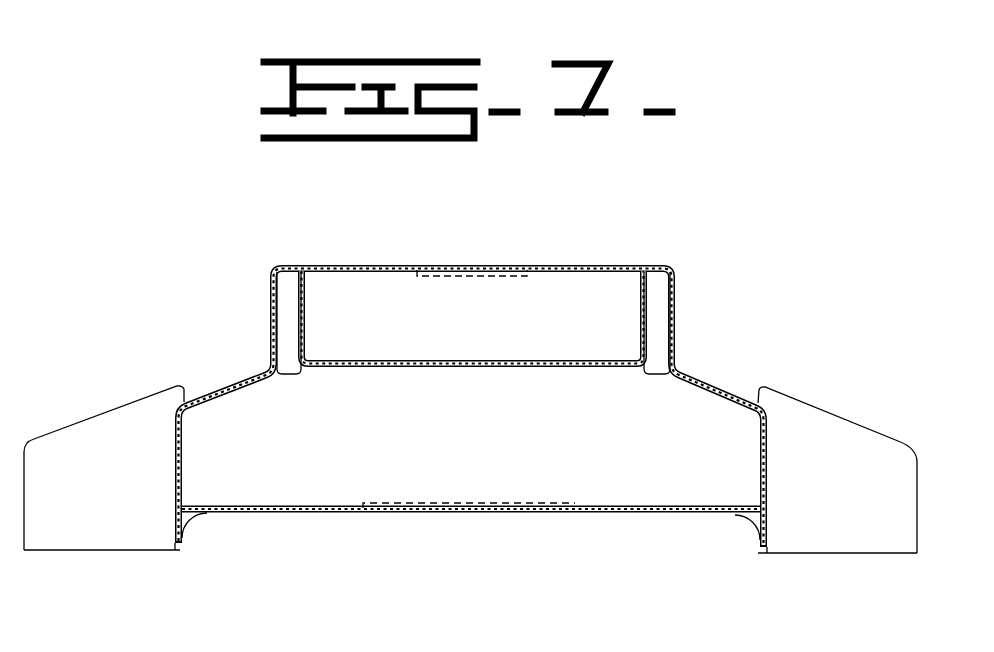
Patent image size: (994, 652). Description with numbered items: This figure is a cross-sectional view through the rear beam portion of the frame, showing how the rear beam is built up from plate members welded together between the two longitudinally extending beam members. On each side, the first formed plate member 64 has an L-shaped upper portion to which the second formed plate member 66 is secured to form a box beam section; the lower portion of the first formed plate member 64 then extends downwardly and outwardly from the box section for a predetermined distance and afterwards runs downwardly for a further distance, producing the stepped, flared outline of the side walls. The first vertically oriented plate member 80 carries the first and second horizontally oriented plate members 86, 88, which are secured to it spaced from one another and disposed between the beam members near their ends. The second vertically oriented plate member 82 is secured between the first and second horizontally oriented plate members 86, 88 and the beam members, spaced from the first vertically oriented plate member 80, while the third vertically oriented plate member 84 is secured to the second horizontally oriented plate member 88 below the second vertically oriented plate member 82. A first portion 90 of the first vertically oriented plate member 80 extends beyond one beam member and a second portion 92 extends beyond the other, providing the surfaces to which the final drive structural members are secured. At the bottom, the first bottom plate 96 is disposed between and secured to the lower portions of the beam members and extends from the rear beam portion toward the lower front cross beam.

The first formed plate member 64 is at (247, 387).
The second formed plate member 66 is at (305, 298).
The first vertically oriented plate member 80 is at (191, 522).
The second vertically oriented plate member 82 is at (477, 337).
The third vertically oriented plate member 84 is at (489, 466).
The first horizontally oriented plate member 86 is at (498, 265).
The second horizontally oriented plate member 88 is at (471, 367).
The first portion 90 is at (124, 493).
The second portion 92 is at (857, 520).
The first bottom plate 96 is at (390, 512).